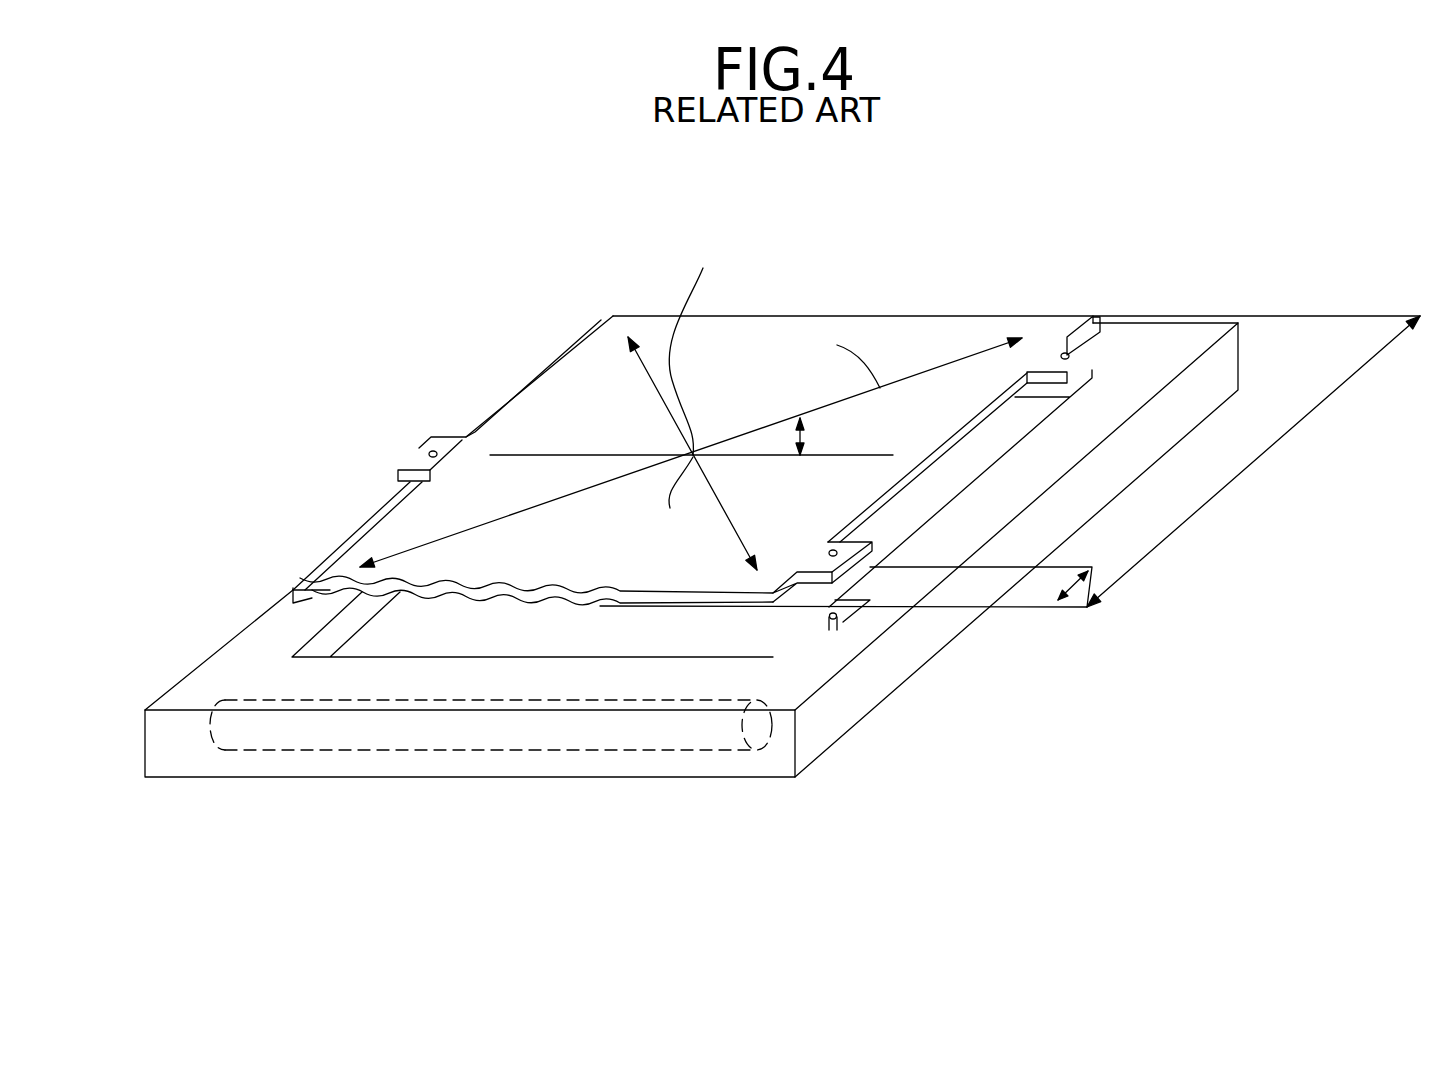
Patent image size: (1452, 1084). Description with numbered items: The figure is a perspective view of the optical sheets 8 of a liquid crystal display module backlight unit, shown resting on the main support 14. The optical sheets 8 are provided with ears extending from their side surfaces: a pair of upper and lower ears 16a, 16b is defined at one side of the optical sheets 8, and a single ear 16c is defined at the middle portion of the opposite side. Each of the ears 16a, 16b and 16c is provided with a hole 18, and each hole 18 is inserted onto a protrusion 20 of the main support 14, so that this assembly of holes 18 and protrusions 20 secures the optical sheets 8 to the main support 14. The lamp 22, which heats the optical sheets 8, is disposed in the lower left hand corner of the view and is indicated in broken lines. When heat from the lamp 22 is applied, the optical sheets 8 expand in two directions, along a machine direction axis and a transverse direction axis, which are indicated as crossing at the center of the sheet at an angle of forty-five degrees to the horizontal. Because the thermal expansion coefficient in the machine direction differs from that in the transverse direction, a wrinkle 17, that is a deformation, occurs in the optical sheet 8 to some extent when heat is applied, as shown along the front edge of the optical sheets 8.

The optical sheets 8 is at (613, 316).
The main support 14 is at (1240, 317).
The upper ear 16a is at (1100, 328).
The lower ear 16b is at (795, 600).
The ear 16c is at (420, 455).
The wrinkle 17 is at (293, 590).
The hole 18 is at (1065, 352).
The protrusion 20 is at (838, 619).
The lamp 22 is at (677, 755).